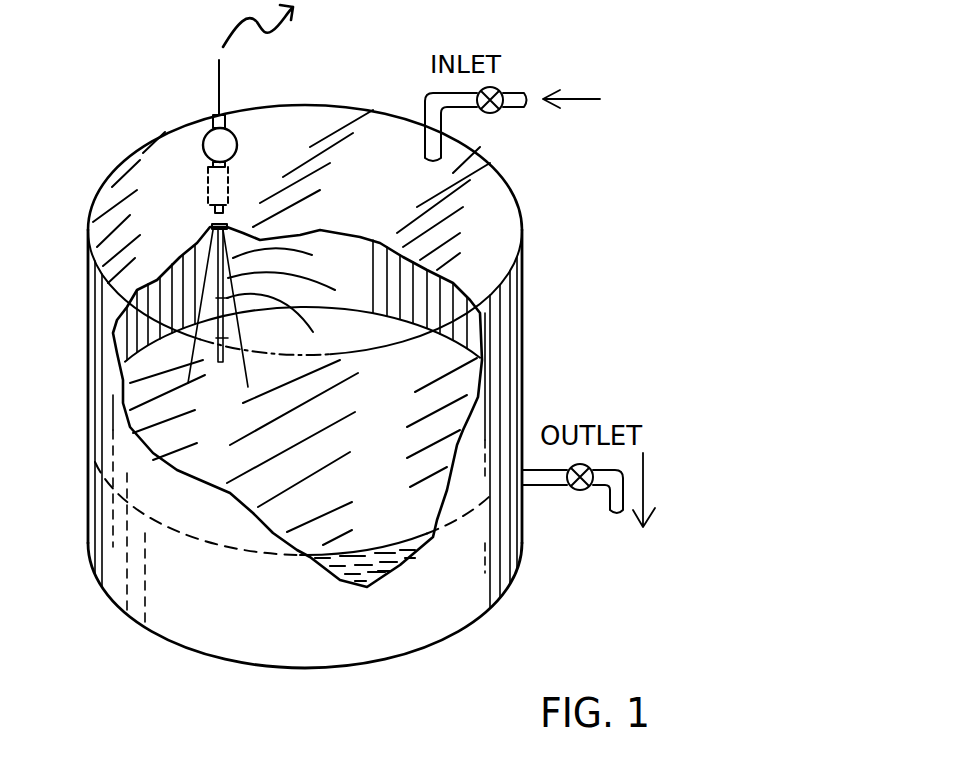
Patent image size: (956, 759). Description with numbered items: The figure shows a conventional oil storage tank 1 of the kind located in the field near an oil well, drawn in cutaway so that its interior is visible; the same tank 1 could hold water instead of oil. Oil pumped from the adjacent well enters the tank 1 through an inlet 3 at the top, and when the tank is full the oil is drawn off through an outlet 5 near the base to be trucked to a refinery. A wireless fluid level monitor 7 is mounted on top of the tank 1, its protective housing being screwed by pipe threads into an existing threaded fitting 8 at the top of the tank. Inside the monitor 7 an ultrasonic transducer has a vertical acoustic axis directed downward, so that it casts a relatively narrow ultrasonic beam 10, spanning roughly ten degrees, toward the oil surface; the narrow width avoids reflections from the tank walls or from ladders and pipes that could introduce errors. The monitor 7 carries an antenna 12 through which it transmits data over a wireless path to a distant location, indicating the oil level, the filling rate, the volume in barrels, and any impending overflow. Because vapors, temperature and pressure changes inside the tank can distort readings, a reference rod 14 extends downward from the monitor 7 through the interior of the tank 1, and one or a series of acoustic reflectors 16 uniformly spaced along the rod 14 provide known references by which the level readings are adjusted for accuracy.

The oil storage tank 1 is at (543, 353).
The inlet 3 is at (508, 108).
The outlet 5 is at (617, 510).
The wireless fluid level monitor 7 is at (203, 143).
The threaded fitting 8 is at (206, 174).
The ultrasonic beam 10 is at (286, 254).
The antenna 12 is at (217, 91).
The reference rod 14 is at (295, 287).
The acoustic reflectors 16 is at (282, 333).